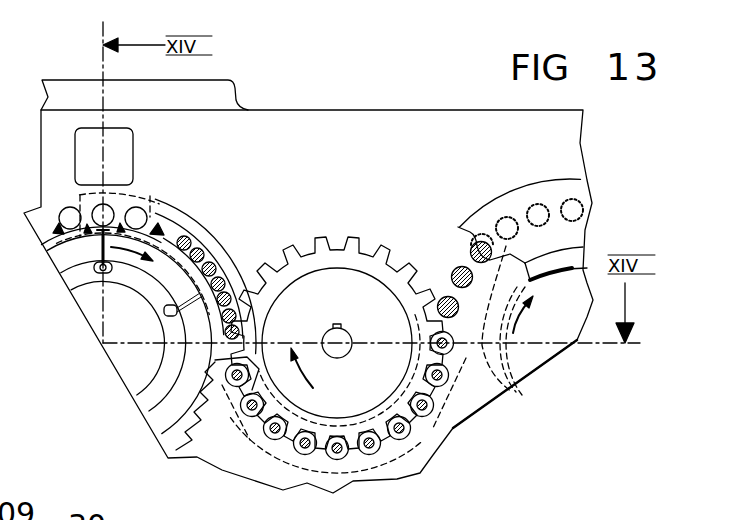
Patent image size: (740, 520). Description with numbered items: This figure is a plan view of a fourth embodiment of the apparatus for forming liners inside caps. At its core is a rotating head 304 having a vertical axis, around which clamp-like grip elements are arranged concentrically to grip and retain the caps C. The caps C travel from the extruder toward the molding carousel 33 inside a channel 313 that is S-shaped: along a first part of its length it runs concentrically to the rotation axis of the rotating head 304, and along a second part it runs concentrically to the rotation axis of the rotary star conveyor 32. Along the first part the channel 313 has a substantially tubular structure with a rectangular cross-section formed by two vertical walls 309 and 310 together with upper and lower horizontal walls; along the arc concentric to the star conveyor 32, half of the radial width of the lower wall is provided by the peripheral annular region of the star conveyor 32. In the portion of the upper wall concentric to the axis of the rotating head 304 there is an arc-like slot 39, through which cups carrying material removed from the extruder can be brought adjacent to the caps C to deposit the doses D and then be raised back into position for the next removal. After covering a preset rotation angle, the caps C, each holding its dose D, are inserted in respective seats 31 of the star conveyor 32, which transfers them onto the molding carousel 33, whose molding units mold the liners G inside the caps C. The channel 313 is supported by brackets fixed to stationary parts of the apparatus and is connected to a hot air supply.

The seat 31 is at (400, 262).
The rotary star conveyor 32 is at (362, 236).
The molding carousel 33 is at (503, 407).
The arc-like slot 39 is at (150, 270).
The rotating head 304 is at (110, 382).
The vertical wall 309 is at (238, 265).
The vertical wall 310 is at (193, 253).
The channel 313 is at (231, 233).
The cap C is at (142, 203).
The dose D is at (190, 238).
The liner G is at (410, 318).